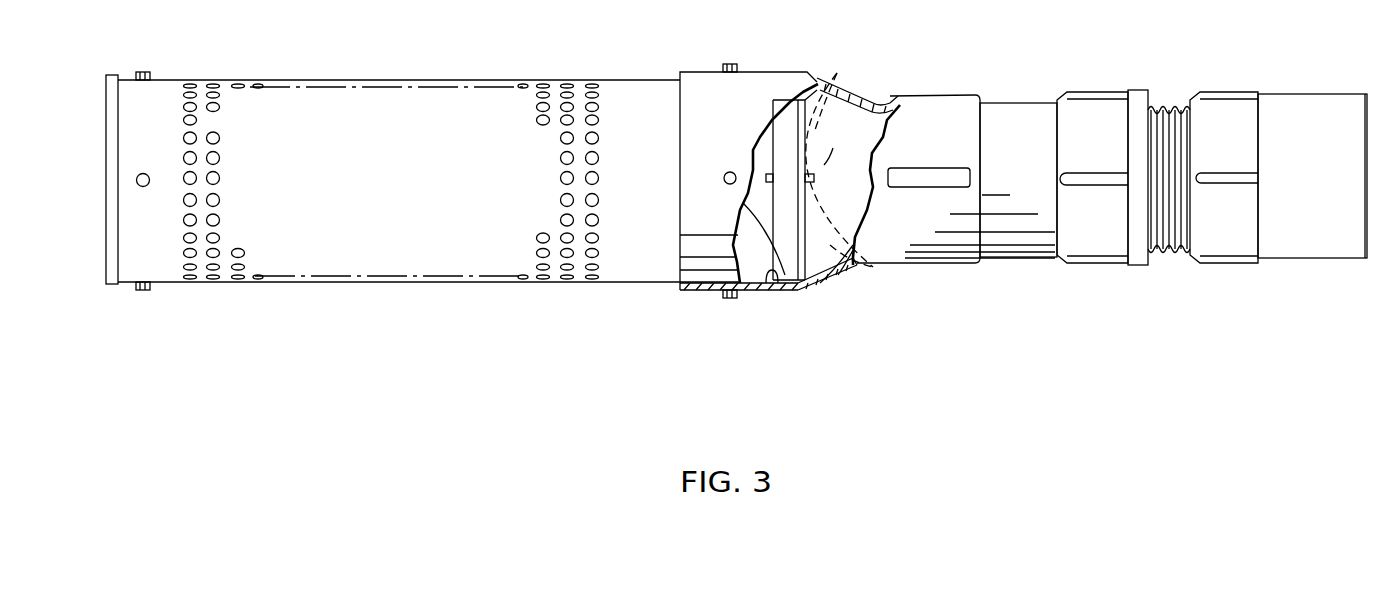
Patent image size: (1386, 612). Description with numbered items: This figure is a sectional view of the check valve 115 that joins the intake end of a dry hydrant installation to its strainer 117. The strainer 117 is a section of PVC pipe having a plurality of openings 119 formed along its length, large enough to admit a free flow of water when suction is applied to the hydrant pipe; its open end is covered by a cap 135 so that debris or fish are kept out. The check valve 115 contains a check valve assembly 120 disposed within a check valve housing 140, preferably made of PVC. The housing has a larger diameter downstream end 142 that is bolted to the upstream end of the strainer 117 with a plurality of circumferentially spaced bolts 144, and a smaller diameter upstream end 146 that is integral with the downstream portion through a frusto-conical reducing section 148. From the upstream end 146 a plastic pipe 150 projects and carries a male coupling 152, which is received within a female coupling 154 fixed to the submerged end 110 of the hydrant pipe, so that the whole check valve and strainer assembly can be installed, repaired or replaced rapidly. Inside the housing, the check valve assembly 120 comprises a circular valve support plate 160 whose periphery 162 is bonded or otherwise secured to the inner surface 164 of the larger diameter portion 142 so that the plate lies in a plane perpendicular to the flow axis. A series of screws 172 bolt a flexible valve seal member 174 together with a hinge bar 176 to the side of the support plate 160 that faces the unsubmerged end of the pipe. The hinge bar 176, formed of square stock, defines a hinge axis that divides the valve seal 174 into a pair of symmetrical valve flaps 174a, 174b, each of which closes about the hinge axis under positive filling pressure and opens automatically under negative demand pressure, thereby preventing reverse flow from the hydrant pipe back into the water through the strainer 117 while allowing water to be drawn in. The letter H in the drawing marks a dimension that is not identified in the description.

The submerged end 110 is at (1302, 245).
The check valve 115 is at (753, 318).
The strainer 117 is at (420, 304).
The openings 119 is at (238, 268).
The check valve assembly 120 is at (866, 125).
The cap 135 is at (110, 233).
The check valve housing 140 is at (805, 310).
The larger diameter downstream end 142 is at (748, 290).
The bolts 144 is at (737, 70).
The smaller diameter upstream end 146 is at (948, 270).
The frusto-conical reducing section 148 is at (850, 268).
The plastic pipe 150 is at (1010, 107).
The male coupling 152 is at (1146, 71).
The female coupling 154 is at (1228, 272).
The valve support plate 160 is at (817, 288).
The periphery 162 is at (808, 224).
The inner surface 164 is at (783, 283).
The screws 172 is at (814, 178).
The flexible valve seal member 174 is at (749, 165).
The valve flap 174a is at (833, 72).
The valve flap 174b is at (883, 262).
The hinge bar 176 is at (838, 194).
The height H is at (836, 140).